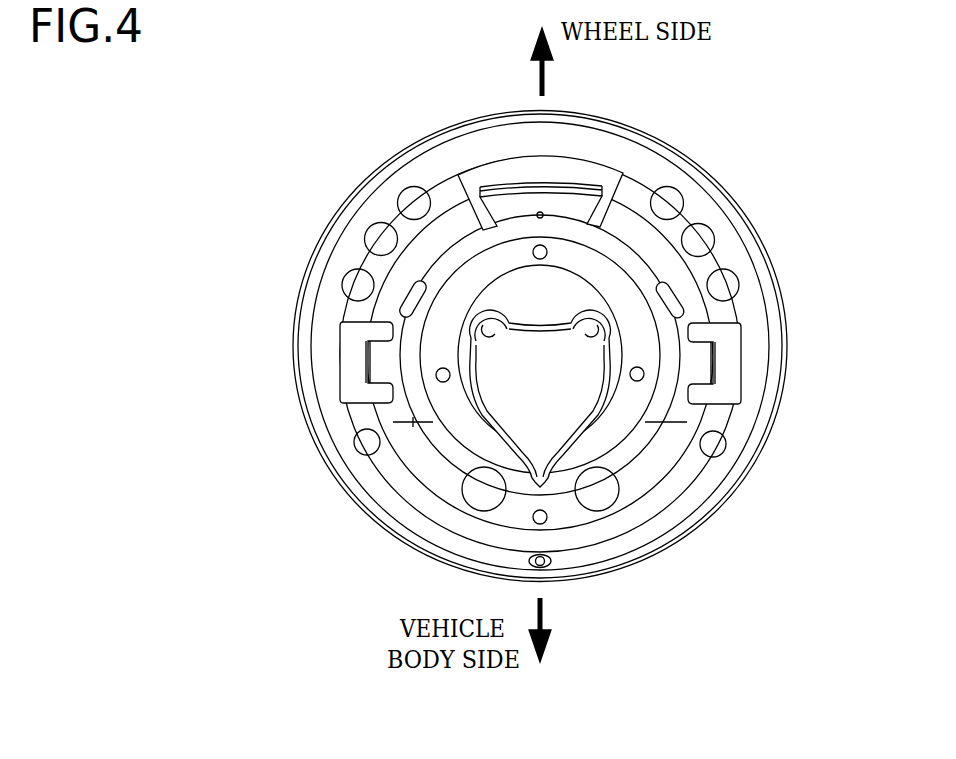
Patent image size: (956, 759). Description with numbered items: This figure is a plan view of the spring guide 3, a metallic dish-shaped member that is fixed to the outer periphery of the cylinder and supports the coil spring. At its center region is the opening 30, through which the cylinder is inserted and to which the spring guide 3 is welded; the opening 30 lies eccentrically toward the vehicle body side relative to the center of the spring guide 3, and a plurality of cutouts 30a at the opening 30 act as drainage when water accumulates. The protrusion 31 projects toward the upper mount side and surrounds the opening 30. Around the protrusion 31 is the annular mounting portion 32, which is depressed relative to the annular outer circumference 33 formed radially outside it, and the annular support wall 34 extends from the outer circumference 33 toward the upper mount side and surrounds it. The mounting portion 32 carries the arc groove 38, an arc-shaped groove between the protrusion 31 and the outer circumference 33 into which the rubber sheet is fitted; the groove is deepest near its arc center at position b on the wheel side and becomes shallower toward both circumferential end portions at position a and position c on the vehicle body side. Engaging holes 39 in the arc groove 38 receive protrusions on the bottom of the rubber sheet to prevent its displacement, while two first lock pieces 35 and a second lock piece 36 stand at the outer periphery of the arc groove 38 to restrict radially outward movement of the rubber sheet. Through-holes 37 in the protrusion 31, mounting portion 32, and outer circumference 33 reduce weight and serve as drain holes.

The spring guide 3 is at (333, 152).
The opening 30 is at (495, 460).
The cutout 30a is at (494, 330).
The protrusion 31 is at (447, 323).
The mounting portion 32 is at (447, 447).
The outer circumference 33 is at (328, 320).
The support wall 34 is at (680, 524).
The first lock piece 35 is at (363, 361).
The second lock piece 36 is at (601, 210).
The through-hole 37 is at (723, 287).
The arc groove 38 is at (455, 230).
The engaging hole 39 is at (404, 288).
The position a is at (410, 422).
The position b is at (543, 213).
The position c is at (687, 422).